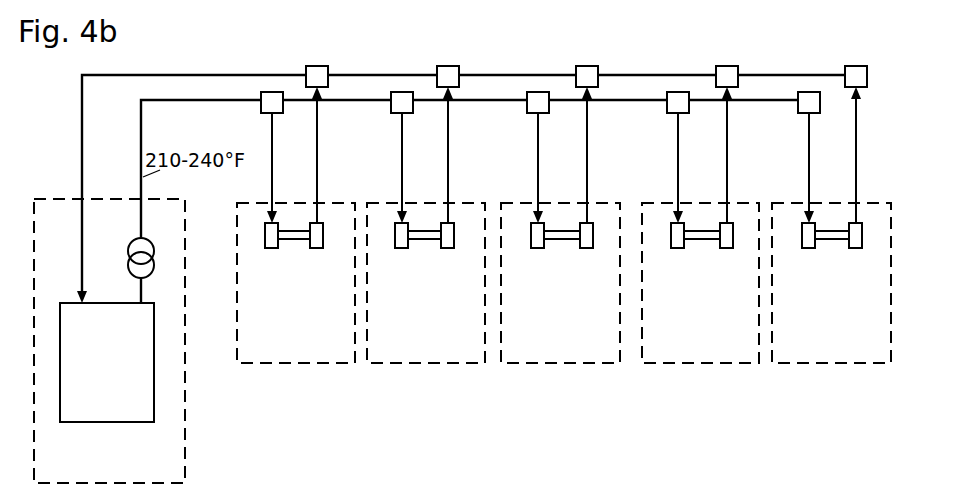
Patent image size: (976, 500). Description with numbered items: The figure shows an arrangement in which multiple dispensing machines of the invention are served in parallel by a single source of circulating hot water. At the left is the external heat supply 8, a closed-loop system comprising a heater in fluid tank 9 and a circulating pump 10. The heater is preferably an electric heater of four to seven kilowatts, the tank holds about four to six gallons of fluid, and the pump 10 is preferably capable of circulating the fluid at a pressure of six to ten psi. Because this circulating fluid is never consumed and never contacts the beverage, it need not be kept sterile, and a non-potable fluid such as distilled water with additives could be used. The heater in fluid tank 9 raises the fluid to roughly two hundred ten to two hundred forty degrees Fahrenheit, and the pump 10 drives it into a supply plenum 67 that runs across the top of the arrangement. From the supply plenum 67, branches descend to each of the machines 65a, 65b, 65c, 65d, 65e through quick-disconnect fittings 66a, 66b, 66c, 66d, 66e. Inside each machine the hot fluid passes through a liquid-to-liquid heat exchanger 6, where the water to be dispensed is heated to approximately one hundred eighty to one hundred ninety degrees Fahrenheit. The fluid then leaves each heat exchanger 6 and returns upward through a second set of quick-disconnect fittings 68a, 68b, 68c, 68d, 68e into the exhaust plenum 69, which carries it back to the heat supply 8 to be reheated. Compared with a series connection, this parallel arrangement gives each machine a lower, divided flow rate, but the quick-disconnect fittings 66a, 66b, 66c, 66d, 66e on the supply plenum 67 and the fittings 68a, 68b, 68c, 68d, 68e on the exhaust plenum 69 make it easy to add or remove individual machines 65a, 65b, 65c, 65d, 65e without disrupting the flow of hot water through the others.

The liquid-to-liquid heat exchanger 6 is at (302, 250).
The external heat supply 8 is at (70, 196).
The heater in fluid tank 9 is at (66, 297).
The circulating pump 10 is at (157, 259).
The supply plenum 67 is at (135, 142).
The exhaust plenum 69 is at (204, 73).
The machine 65a is at (279, 336).
The machine 65b is at (409, 336).
The machine 65c is at (543, 336).
The machine 65d is at (683, 336).
The machine 65e is at (814, 336).
The quick-disconnect fitting 66a is at (263, 104).
The quick-disconnect fitting 66b is at (401, 100).
The quick-disconnect fitting 66c is at (535, 102).
The quick-disconnect fitting 66d is at (672, 100).
The quick-disconnect fitting 66e is at (800, 106).
The quick-disconnect fitting 68a is at (316, 80).
The quick-disconnect fitting 68b is at (447, 80).
The quick-disconnect fitting 68c is at (586, 80).
The quick-disconnect fitting 68d is at (726, 80).
The quick-disconnect fitting 68e is at (855, 80).